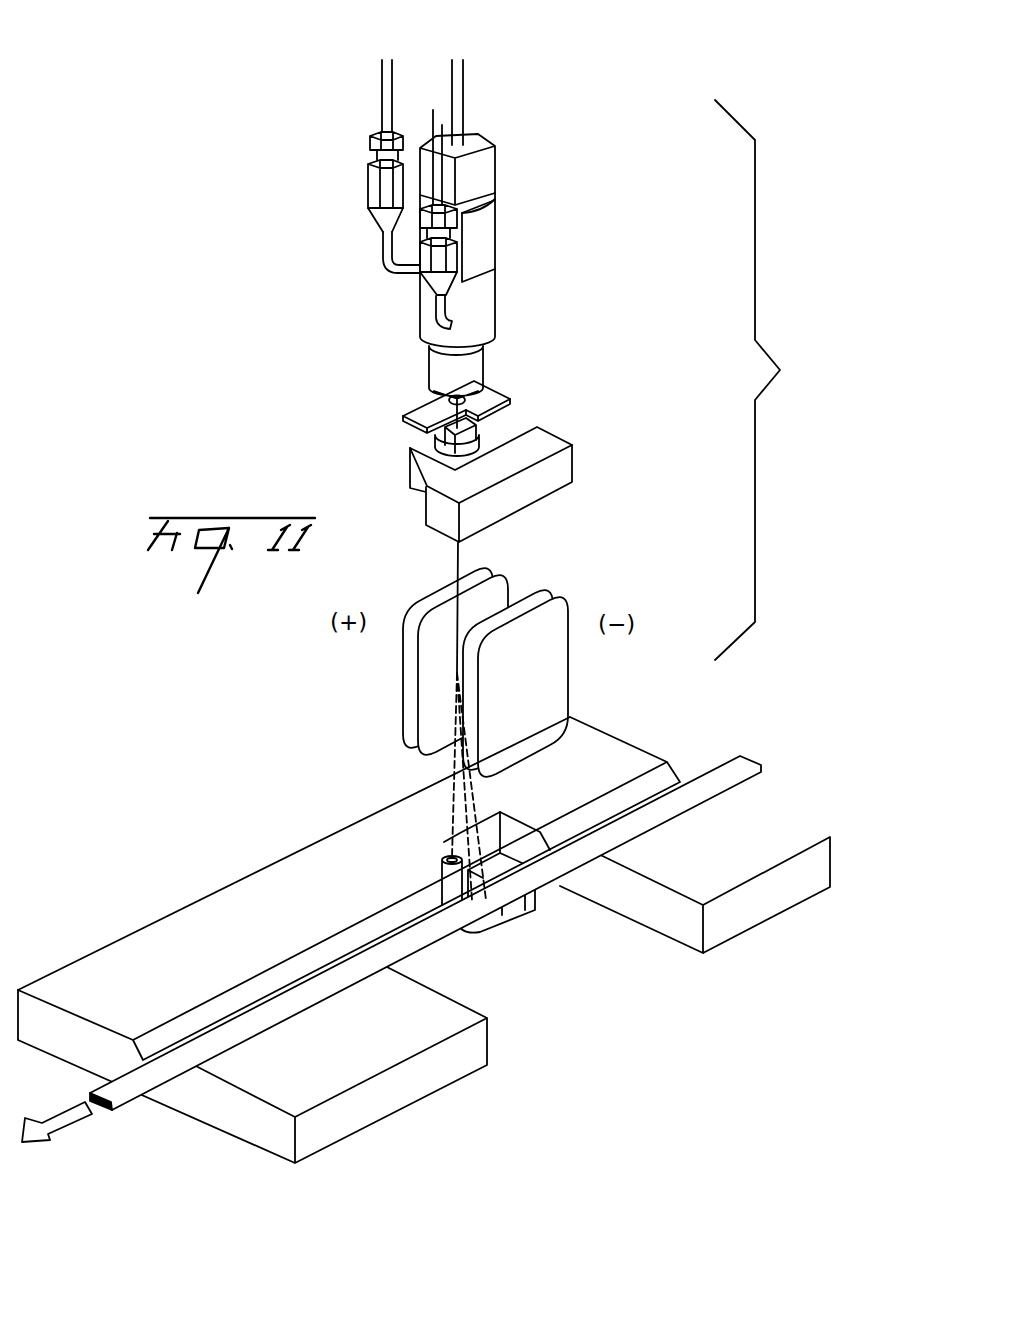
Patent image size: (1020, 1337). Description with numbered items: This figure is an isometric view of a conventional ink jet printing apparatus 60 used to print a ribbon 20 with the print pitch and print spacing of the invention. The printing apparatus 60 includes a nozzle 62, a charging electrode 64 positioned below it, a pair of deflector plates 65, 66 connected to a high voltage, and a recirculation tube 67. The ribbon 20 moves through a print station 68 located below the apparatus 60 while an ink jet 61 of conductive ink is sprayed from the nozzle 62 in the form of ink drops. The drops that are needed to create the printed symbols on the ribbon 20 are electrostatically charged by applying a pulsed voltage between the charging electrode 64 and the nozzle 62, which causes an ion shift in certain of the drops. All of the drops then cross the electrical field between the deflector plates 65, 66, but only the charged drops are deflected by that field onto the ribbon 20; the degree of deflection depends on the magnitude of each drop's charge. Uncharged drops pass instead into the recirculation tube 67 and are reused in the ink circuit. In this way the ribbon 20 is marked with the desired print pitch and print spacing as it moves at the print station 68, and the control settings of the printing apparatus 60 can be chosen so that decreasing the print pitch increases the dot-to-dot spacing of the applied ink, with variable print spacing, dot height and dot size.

The ribbon 20 is at (722, 764).
The printing apparatus 60 is at (769, 380).
The ink jet 61 is at (496, 394).
The nozzle 62 is at (488, 253).
The charging electrode 64 is at (548, 444).
The deflector plate 65 is at (509, 586).
The deflector plate 66 is at (570, 607).
The recirculation tube 67 is at (478, 824).
The print station 68 is at (433, 1033).